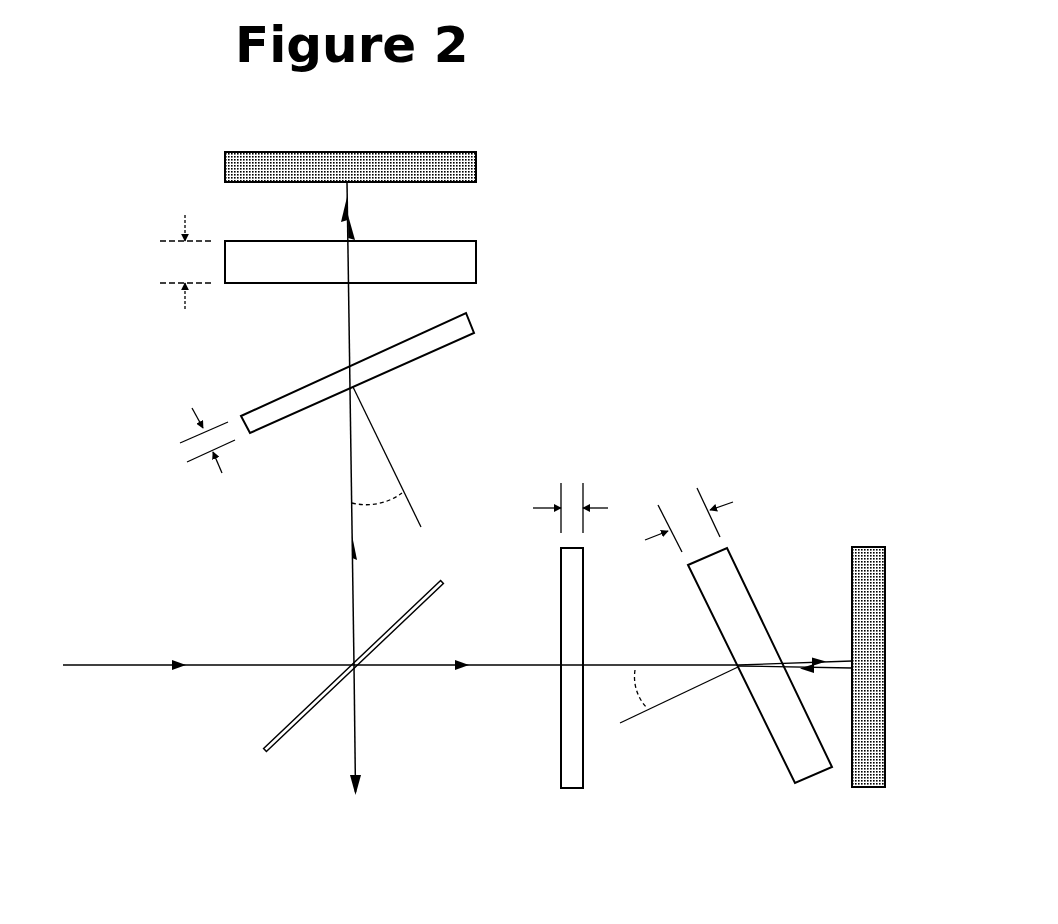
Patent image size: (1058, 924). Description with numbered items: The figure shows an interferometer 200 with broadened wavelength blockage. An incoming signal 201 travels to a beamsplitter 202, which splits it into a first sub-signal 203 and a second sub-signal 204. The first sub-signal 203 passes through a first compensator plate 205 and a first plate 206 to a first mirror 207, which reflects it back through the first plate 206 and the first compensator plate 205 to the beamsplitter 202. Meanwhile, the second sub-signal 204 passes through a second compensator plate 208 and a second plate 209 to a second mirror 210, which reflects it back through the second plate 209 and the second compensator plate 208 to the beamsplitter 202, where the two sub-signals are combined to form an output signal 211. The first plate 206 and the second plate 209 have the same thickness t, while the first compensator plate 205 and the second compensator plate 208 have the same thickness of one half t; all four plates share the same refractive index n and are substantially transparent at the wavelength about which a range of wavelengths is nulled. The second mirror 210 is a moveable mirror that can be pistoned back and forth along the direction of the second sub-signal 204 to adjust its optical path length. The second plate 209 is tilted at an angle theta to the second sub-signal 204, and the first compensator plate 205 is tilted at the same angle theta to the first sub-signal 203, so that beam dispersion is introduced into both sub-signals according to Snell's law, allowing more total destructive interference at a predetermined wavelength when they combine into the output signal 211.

The interferometer 200 is at (808, 186).
The incoming signal 201 is at (178, 668).
The beamsplitter 202 is at (266, 752).
The first sub-signal 203 is at (340, 538).
The second sub-signal 204 is at (445, 670).
The first compensator plate 205 is at (450, 343).
The first plate 206 is at (476, 268).
The first mirror 207 is at (476, 173).
The second compensator plate 208 is at (563, 788).
The second plate 209 is at (790, 773).
The second mirror 210 is at (870, 790).
The output signal 211 is at (355, 803).